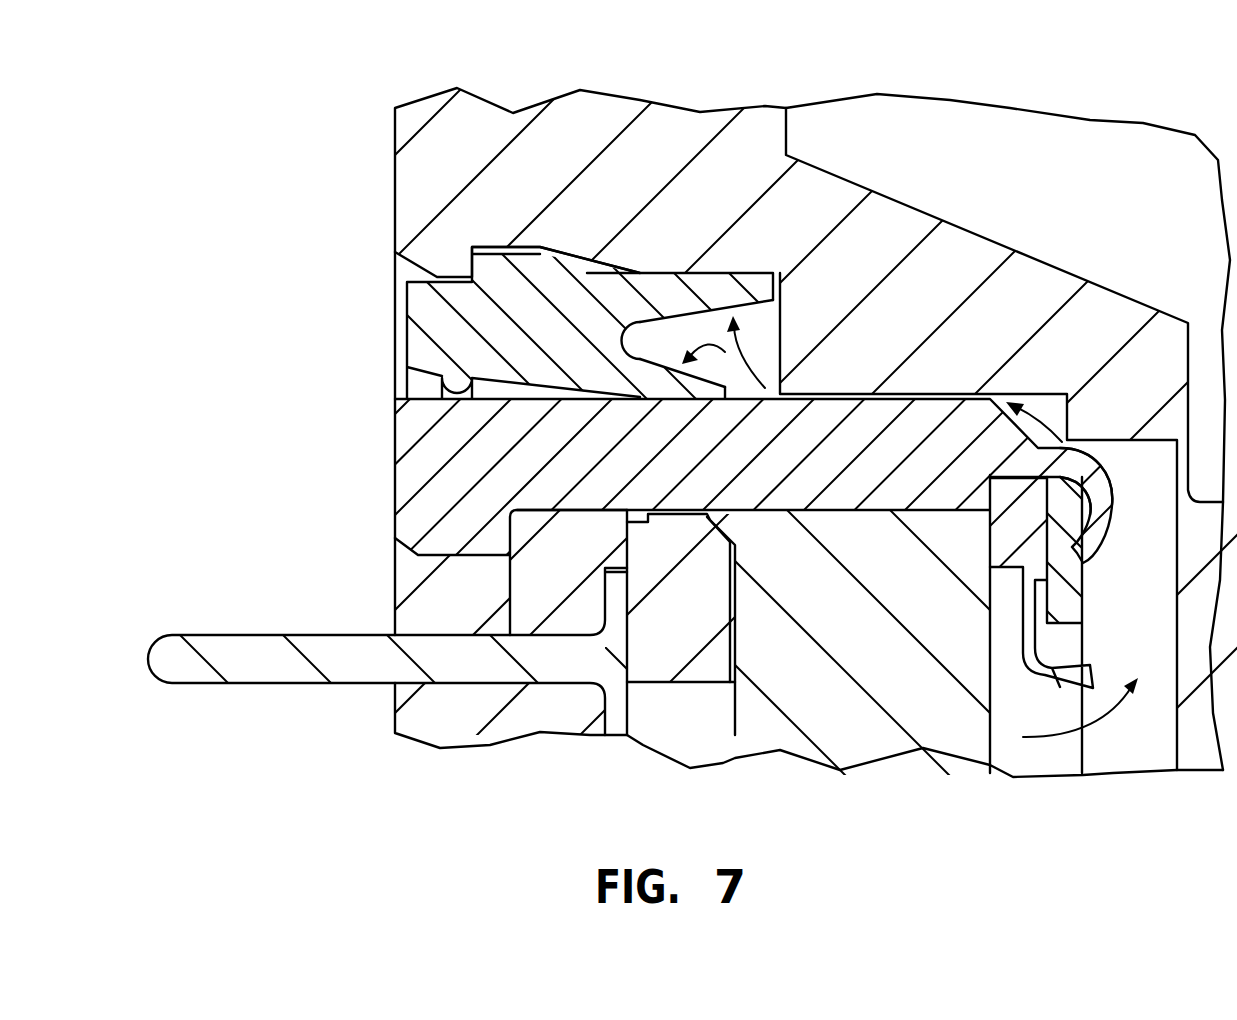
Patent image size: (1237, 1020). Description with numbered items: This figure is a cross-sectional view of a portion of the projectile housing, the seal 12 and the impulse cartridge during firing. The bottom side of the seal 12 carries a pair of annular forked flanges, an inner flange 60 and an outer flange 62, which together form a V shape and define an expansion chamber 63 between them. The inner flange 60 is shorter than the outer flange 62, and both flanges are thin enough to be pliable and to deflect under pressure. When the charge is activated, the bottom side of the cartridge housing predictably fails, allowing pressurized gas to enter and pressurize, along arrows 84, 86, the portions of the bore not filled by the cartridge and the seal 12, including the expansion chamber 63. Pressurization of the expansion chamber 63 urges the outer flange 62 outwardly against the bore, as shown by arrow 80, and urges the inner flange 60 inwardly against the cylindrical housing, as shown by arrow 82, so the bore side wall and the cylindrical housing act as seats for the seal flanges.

The seal 12 is at (404, 329).
The inner flange 60 is at (618, 450).
The outer flange 62 is at (733, 294).
The expansion chamber 63 is at (754, 333).
The arrow 80 is at (753, 372).
The arrow 82 is at (708, 338).
The arrow 84 is at (1097, 727).
The arrow 86 is at (1041, 432).